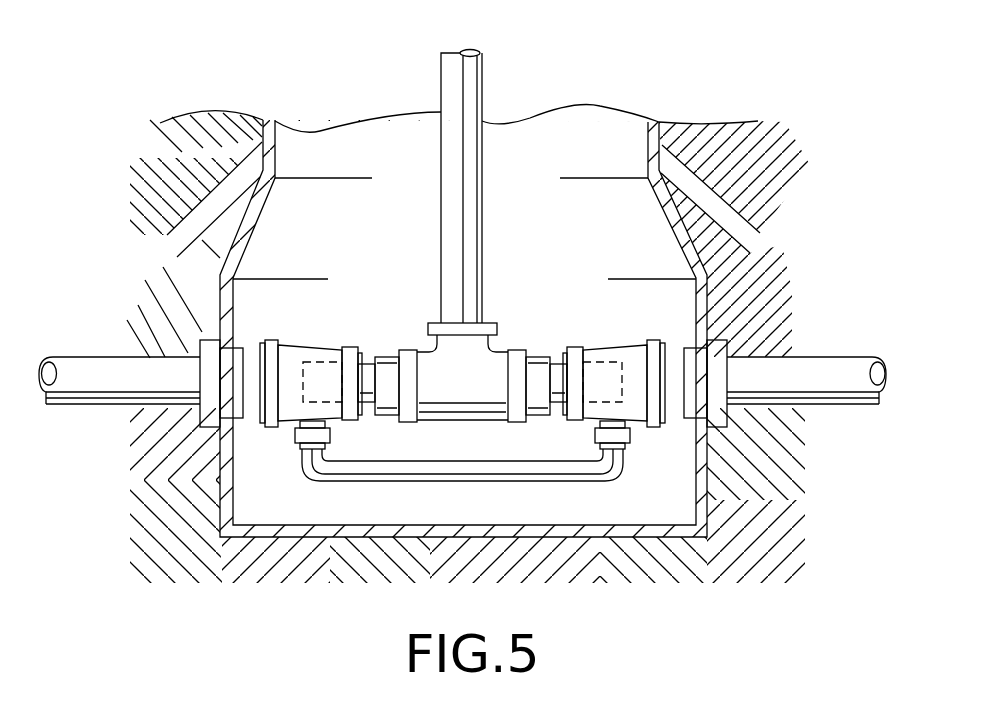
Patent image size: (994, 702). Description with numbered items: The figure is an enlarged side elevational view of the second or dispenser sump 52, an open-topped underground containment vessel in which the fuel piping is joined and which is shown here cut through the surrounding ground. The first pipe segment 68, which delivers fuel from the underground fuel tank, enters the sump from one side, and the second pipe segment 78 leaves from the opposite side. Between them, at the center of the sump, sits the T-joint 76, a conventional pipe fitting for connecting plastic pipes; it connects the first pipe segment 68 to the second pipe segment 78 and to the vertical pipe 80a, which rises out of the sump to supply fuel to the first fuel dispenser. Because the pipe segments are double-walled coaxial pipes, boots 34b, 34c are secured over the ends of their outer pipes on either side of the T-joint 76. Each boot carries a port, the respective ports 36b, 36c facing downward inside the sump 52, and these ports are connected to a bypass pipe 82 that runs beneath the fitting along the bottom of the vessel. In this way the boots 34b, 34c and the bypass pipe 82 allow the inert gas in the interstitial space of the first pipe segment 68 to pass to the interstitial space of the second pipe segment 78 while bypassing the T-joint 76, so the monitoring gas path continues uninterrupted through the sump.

The second sump 52 is at (204, 88).
The pipe 80a is at (468, 93).
The T-joint 76 is at (495, 362).
The boot 34b is at (317, 353).
The boot 34c is at (601, 360).
The port 36b is at (297, 437).
The port 36c is at (630, 437).
The bypass pipe 82 is at (483, 482).
The first pipe segment 68 is at (102, 397).
The second pipe segment 78 is at (800, 368).